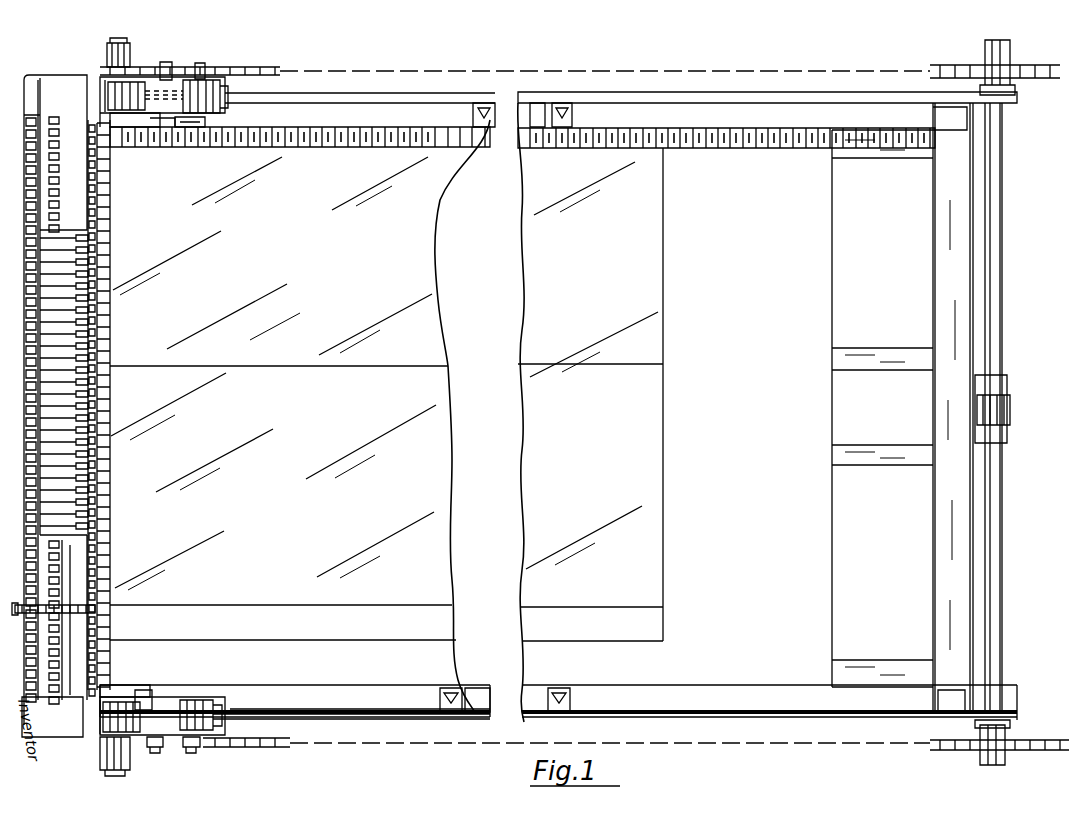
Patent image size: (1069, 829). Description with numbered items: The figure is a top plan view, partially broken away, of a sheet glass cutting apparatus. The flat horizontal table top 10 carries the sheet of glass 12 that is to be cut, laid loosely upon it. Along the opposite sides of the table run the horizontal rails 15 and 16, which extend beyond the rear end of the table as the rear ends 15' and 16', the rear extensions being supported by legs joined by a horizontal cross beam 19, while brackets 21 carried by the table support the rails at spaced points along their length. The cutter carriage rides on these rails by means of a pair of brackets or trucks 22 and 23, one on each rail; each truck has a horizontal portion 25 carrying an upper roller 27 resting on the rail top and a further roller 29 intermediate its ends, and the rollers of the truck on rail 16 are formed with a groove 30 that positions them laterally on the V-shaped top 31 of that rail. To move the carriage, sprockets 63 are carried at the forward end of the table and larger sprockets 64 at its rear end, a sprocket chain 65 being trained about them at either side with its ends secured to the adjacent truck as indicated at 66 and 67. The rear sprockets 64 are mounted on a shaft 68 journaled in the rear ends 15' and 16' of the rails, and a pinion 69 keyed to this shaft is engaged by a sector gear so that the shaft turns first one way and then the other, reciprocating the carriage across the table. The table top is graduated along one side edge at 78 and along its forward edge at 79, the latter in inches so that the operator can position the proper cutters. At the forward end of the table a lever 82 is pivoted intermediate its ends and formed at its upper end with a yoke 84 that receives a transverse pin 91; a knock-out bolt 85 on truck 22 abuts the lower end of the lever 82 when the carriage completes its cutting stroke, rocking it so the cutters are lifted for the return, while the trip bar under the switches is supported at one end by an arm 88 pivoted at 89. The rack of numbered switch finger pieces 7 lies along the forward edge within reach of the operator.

The key rack 7 is at (25, 375).
The table top 10 is at (825, 305).
The sheet of glass 12 is at (645, 512).
The rail 15 is at (297, 101).
The rear end of rail 15' is at (767, 120).
The rail 16 is at (295, 701).
The rear end of rail 16' is at (769, 702).
The horizontal cross beam 19 is at (950, 300).
The bracket 21 is at (470, 113).
The bracket or truck 22 is at (176, 80).
The bracket or truck 23 is at (168, 700).
The horizontal portion 25 is at (95, 732).
The upper roller 27 is at (222, 98).
The roller 29 is at (110, 95).
The groove 30 is at (215, 712).
The V-shaped top 31 is at (268, 710).
The sprocket 63 is at (130, 62).
The sprocket 64 is at (1018, 68).
The sprocket chain 65 is at (955, 52).
The chain end securement 66 is at (153, 750).
The chain end securement 67 is at (195, 750).
The shaft 68 is at (1002, 492).
The pinion 69 is at (1010, 406).
The graduations 78 is at (385, 148).
The graduations 79 is at (112, 402).
The lever 82 is at (158, 130).
The yoke 84 is at (70, 553).
The knock-out bolt 85 is at (186, 130).
The arm 88 is at (120, 688).
The pivot 89 is at (150, 690).
The transverse pin 91 is at (80, 620).